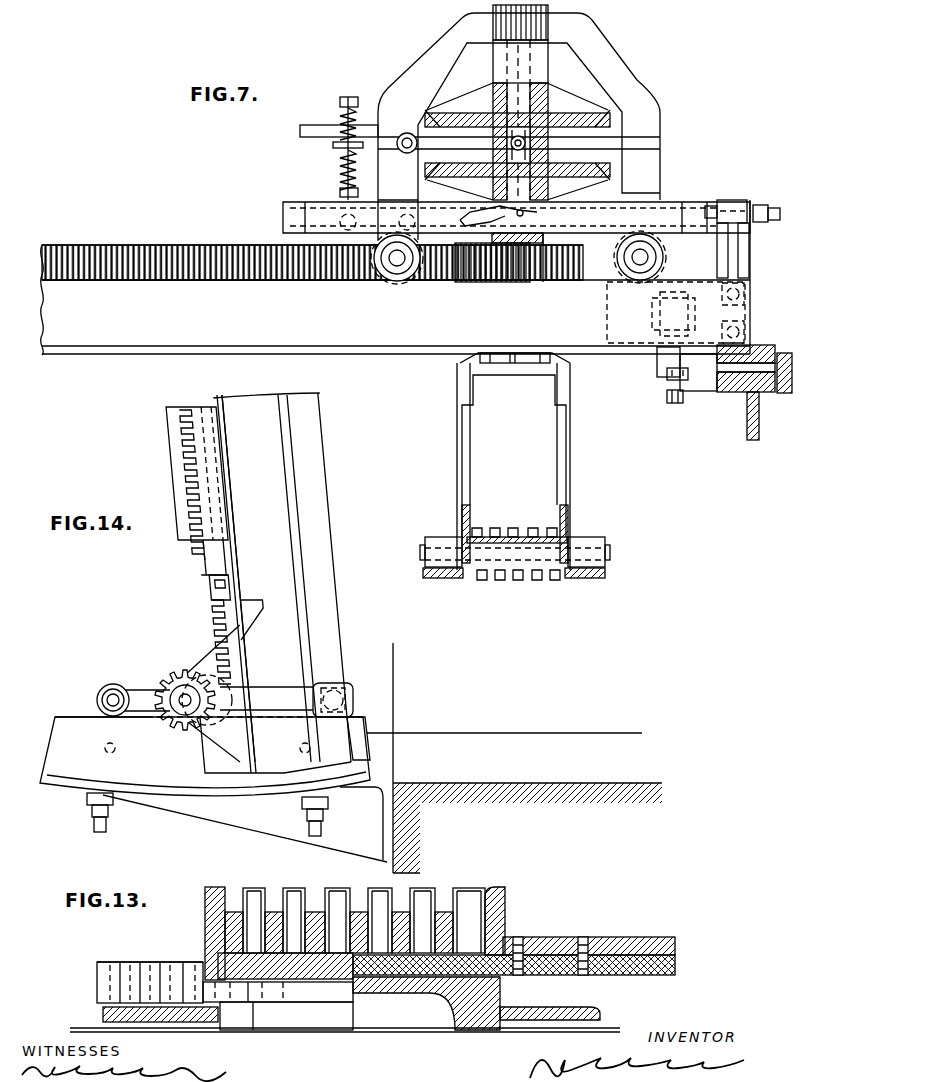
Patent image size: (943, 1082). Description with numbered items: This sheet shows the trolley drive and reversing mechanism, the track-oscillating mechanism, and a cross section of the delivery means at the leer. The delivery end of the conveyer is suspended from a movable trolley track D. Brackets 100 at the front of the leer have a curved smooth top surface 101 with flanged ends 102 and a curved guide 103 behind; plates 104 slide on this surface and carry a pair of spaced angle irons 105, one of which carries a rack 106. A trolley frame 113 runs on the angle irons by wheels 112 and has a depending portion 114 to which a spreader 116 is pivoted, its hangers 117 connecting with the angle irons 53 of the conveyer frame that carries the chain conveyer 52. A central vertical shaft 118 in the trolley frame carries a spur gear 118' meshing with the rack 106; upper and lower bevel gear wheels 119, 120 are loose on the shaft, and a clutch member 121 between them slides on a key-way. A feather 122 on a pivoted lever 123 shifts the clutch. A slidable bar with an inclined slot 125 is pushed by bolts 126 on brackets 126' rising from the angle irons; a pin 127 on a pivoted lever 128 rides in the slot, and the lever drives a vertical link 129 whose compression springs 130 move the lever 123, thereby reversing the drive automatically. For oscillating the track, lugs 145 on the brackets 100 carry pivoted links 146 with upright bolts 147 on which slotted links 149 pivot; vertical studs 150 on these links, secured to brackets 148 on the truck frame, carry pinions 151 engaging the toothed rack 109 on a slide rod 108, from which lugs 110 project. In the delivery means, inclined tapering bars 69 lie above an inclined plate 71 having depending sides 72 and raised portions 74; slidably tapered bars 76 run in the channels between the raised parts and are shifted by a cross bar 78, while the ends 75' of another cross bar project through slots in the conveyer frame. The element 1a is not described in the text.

In FIG. 7, the angle irons 105 is at (395, 277).
In FIG. 14, the angle irons 105 is at (303, 643).
In FIG. 7, the trolley track D is at (222, 245).
In FIG. 14, the trolley track D is at (280, 508).
In FIG. 7, the rack 106 is at (248, 282).
In FIG. 14, the rack 106 is at (180, 457).
In FIG. 7, the pivoted lever 128 is at (340, 272).
In FIG. 7, the inclined slot 125 is at (487, 273).
In FIG. 7, the spur gear 118' is at (570, 279).
In FIG. 7, the wheels 112 is at (400, 282).
In FIG. 7, the trolley frame 113 is at (625, 80).
In FIG. 7, the rotatable shaft 118 is at (578, 102).
In FIG. 7, the upper bevel gear wheel 119 is at (598, 115).
In FIG. 7, the lower bevel gear wheel 120 is at (565, 185).
In FIG. 7, the clutch member 121 is at (565, 150).
In FIG. 7, the feather 122 is at (530, 143).
In FIG. 7, the pivoted lever 123 is at (440, 120).
In FIG. 7, the compression springs 130 is at (336, 125).
In FIG. 7, the vertical link 129 is at (340, 197).
In FIG. 7, the pin 127 is at (533, 213).
In FIG. 7, the bolts 126 is at (746, 225).
In FIG. 7, the brackets 126' is at (754, 250).
In FIG. 7, the upright bolts 147 is at (660, 362).
In FIG. 14, the upright bolts 147 is at (108, 692).
In FIG. 7, the pivoted links 146 is at (667, 377).
In FIG. 14, the pivoted links 146 is at (275, 692).
In FIG. 7, the lugs 145 is at (707, 390).
In FIG. 14, the lugs 145 is at (353, 707).
In FIG. 7, the frame member 1a is at (785, 350).
In FIG. 7, the brackets 100 is at (733, 427).
In FIG. 14, the brackets 100 is at (217, 813).
In FIG. 7, the depending portion 114 is at (532, 363).
In FIG. 7, the hangers 117 is at (462, 463).
In FIG. 7, the spreader 116 is at (493, 372).
In FIG. 7, the chain conveyer 52 is at (522, 520).
In FIG. 7, the angle irons 53 is at (457, 573).
In FIG. 13, the angle irons 53 is at (505, 908).
In FIG. 14, the rod 108 is at (210, 556).
In FIG. 14, the toothed rack 109 is at (218, 604).
In FIG. 14, the lugs 110 is at (238, 640).
In FIG. 14, the brackets 148 is at (217, 740).
In FIG. 14, the plates 104 is at (318, 727).
In FIG. 14, the vertical studs 150 is at (182, 685).
In FIG. 14, the pinions 151 is at (175, 683).
In FIG. 14, the slotted links 149 is at (147, 713).
In FIG. 14, the flanged ends 102 is at (55, 742).
In FIG. 14, the curved smooth top surface 101 is at (77, 730).
In FIG. 14, the curved guide 103 is at (147, 793).
In FIG. 13, the inclined tapering bars 69 is at (428, 892).
In FIG. 13, the tapered bars 76 is at (402, 898).
In FIG. 13, the inclined plate 71 is at (300, 970).
In FIG. 13, the cross bar 78 is at (570, 940).
In FIG. 13, the raised portions 74 is at (275, 955).
In FIG. 13, the ends of cross bar 75' is at (157, 974).
In FIG. 13, the depending sides 72 is at (244, 1017).